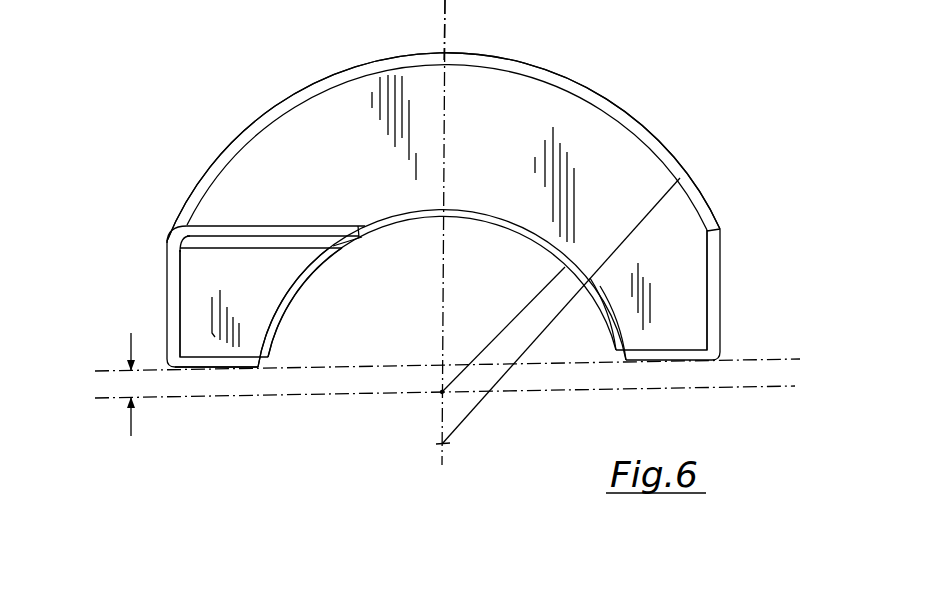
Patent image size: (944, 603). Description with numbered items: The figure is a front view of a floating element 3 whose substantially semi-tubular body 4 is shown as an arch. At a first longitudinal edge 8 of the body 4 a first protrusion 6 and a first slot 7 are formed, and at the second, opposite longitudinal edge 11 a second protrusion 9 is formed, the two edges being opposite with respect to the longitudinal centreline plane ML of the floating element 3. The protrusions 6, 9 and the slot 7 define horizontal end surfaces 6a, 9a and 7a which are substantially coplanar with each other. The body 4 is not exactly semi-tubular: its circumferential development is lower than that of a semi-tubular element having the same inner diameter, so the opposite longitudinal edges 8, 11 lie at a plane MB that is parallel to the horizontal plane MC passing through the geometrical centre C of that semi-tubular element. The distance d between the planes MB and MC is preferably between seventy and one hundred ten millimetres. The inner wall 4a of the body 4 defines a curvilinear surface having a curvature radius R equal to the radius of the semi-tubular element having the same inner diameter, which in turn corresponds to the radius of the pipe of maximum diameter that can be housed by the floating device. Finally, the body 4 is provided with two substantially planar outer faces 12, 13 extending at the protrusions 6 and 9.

The floating element 3 is at (640, 88).
The substantially semi-tubular body 4 is at (550, 68).
The inner wall 4a is at (365, 250).
The first protrusion 6 is at (203, 298).
The horizontal end surface 6a is at (246, 368).
The first slot 7 is at (268, 288).
The horizontal end surface 7a is at (166, 266).
The first longitudinal edge 8 is at (205, 376).
The second protrusion 9 is at (680, 293).
The horizontal end surface 9a is at (689, 362).
The second longitudinal edge 11 is at (612, 372).
The planar outer face 12 is at (167, 277).
The planar outer face 13 is at (720, 245).
The curvature radius R is at (497, 334).
The geometrical centre C is at (442, 392).
The distance d is at (131, 371).
The plane MB is at (777, 351).
The horizontal plane MC is at (757, 387).
The longitudinal centreline plane ML is at (447, 28).